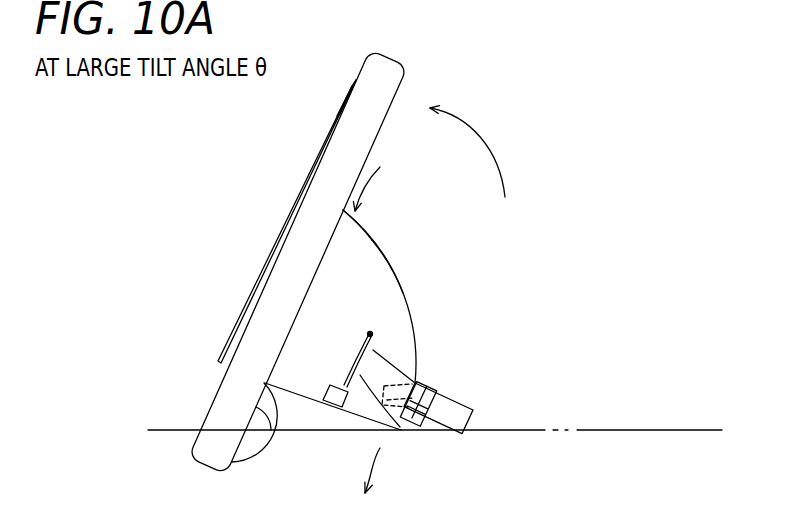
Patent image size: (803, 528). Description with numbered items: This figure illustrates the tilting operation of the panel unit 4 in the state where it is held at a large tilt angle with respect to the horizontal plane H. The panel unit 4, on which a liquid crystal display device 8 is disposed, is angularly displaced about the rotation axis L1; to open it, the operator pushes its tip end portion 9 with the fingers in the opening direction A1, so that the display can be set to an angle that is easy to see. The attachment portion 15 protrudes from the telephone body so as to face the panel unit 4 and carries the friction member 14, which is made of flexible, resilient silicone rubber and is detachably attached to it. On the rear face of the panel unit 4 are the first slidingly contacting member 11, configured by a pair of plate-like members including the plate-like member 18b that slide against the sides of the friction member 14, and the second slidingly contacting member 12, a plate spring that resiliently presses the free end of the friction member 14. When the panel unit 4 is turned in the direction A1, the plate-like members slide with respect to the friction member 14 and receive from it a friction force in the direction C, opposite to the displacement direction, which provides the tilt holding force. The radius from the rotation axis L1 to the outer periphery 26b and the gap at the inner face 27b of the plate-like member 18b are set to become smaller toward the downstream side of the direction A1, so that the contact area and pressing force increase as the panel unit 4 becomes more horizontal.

The panel unit 4 is at (322, 184).
The liquid crystal display device 8 is at (337, 116).
The tip end portion 9 is at (384, 82).
The first slidingly contacting member 11 is at (383, 182).
The second slidingly contacting member 12 is at (369, 344).
The friction member 14 is at (384, 373).
The attachment portion 15 is at (420, 379).
The plate-like member 18b is at (370, 277).
The outer periphery 26b is at (405, 291).
The inner face 27b is at (360, 248).
The opening direction A1 is at (484, 133).
The friction force direction C is at (380, 467).
The horizontal plane H is at (652, 431).
The rotation axis L1 is at (265, 449).